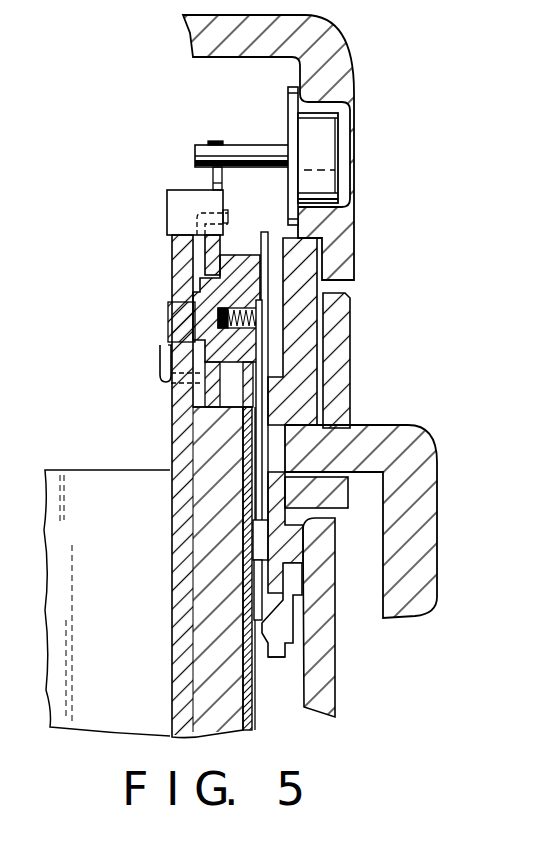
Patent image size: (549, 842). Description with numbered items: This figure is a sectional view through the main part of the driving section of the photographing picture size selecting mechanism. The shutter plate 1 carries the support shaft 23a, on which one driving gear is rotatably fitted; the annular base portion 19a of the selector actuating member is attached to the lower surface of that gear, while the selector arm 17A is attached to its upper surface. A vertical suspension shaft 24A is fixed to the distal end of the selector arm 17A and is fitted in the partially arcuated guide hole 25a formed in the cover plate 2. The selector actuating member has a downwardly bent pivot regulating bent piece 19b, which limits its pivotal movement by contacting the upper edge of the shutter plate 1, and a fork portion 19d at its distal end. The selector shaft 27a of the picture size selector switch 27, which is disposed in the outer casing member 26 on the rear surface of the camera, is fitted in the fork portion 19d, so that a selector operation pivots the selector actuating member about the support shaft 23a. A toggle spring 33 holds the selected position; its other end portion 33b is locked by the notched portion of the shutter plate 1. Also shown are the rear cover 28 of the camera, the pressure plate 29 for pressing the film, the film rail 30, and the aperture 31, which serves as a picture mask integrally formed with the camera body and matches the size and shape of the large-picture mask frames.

The shutter plate 1 is at (172, 437).
The cover plate 2 is at (247, 720).
The selector arm 17A is at (262, 490).
The annular base portion 19a is at (172, 400).
The pivot regulating bent piece 19b is at (172, 212).
The fork portion 19d is at (210, 142).
The support shaft 23a is at (200, 300).
The vertical suspension shaft 24A is at (257, 575).
The partially arcuated guide hole 25a is at (257, 545).
The outer casing member 26 is at (343, 62).
The picture size selector switch 27 is at (335, 153).
The selector shaft 27a is at (247, 152).
The rear cover 28 is at (422, 472).
The pressure plate 29 is at (333, 663).
The film rail 30 is at (285, 632).
The aperture 31 is at (277, 657).
The toggle spring 33 is at (210, 262).
The other end portion 33b is at (160, 358).